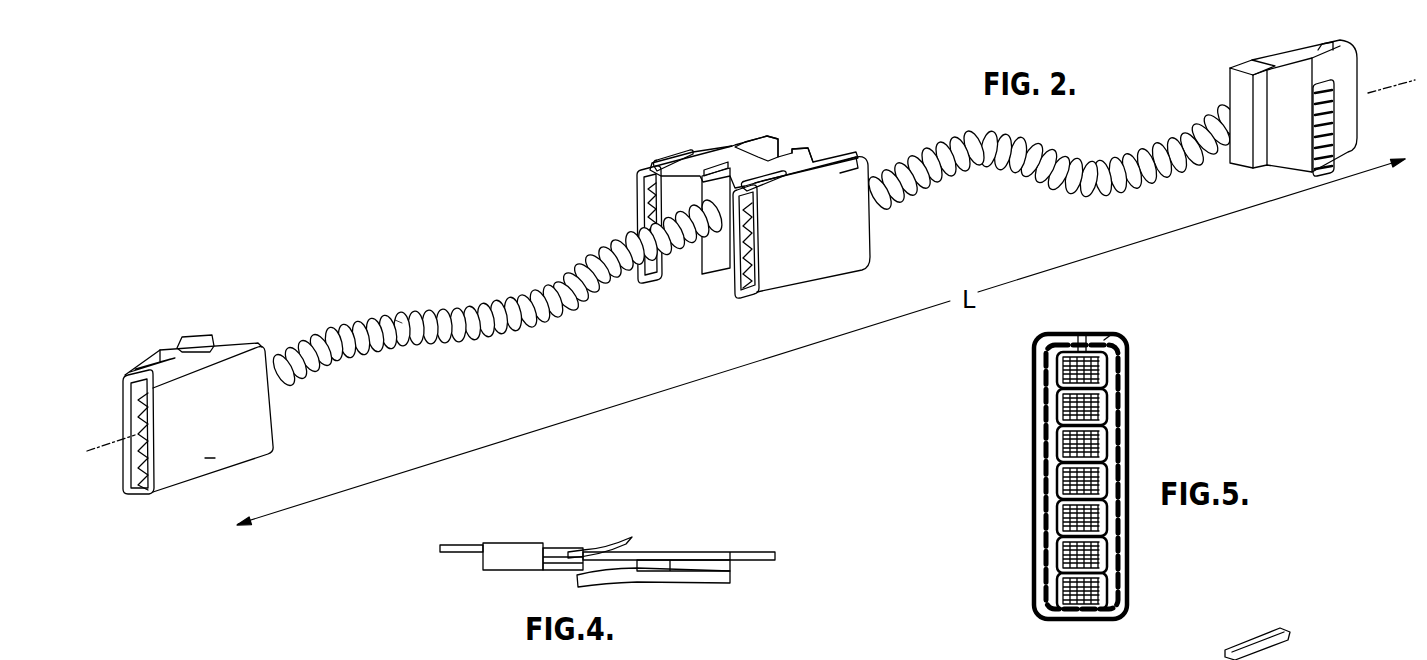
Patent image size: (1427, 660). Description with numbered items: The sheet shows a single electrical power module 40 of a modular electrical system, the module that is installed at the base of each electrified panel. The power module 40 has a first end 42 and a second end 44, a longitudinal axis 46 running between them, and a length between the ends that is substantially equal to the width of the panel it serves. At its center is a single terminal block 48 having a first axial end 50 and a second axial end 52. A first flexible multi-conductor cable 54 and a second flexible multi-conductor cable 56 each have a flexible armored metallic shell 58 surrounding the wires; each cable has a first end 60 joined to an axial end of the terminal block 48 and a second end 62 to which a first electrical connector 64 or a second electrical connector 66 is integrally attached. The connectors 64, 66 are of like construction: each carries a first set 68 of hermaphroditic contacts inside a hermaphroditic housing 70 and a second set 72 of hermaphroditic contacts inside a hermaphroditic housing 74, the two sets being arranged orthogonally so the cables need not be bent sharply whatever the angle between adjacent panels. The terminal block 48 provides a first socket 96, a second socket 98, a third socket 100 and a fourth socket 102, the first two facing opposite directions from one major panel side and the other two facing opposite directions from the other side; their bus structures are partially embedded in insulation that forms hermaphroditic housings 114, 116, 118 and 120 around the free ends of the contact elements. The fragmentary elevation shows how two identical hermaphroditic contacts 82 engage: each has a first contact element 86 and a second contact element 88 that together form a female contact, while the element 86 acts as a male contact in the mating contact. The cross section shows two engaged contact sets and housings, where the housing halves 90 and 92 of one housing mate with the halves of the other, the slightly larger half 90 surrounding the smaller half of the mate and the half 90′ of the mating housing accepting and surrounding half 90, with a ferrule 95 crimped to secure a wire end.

In FIG. 2, the electrical power module 40 is at (855, 95).
In FIG. 2, the first end 42 is at (126, 493).
In FIG. 2, the second end 44 is at (1365, 122).
In FIG. 2, the longitudinal axis 46 is at (117, 447).
In FIG. 2, the terminal block 48 is at (703, 152).
In FIG. 2, the first axial end 50 is at (710, 266).
In FIG. 2, the second axial end 52 is at (807, 153).
In FIG. 2, the first flexible multi-conductor cable 54 is at (474, 306).
In FIG. 2, the second flexible multi-conductor cable 56 is at (1060, 181).
In FIG. 2, the flexible armored metallic shell 58 is at (398, 310).
In FIG. 2, the first end 60 is at (716, 216).
In FIG. 2, the second end 62 is at (1238, 103).
In FIG. 2, the first electrical connector 64 is at (250, 322).
In FIG. 2, the second electrical connector 66 is at (1253, 60).
In FIG. 2, the first set of hermaphroditic contacts 68 is at (140, 400).
In FIG. 2, the hermaphroditic housing 70 is at (210, 462).
In FIG. 5, the hermaphroditic housing 70 is at (1101, 322).
In FIG. 2, the second set of hermaphroditic contacts 72 is at (1312, 100).
In FIG. 2, the hermaphroditic housing 74 is at (198, 336).
In FIG. 4, the first contact 82 is at (482, 543).
In FIG. 4, the first contact element 86 is at (563, 562).
In FIG. 5, the first contact element 86 is at (1062, 376).
In FIG. 4, the second contact element 88 is at (612, 547).
In FIG. 5, the second contact element 88 is at (1100, 378).
In FIG. 5, the first half 90 is at (1045, 338).
In FIG. 5, the first half 90′ is at (1112, 335).
In FIG. 5, the second half 92 is at (1122, 340).
In FIG. 5, the ferrule 95 is at (1195, 659).
In FIG. 2, the first socket 96 is at (737, 295).
In FIG. 2, the second socket 98 is at (879, 242).
In FIG. 2, the third socket 100 is at (634, 203).
In FIG. 2, the fourth socket 102 is at (804, 117).
In FIG. 2, the hermaphroditic housing 114 is at (775, 268).
In FIG. 2, the hermaphroditic housing 116 is at (858, 178).
In FIG. 2, the hermaphroditic housing 118 is at (660, 160).
In FIG. 2, the hermaphroditic housing 120 is at (752, 140).